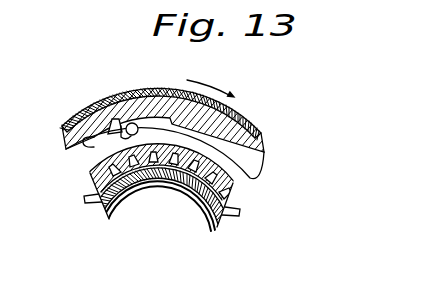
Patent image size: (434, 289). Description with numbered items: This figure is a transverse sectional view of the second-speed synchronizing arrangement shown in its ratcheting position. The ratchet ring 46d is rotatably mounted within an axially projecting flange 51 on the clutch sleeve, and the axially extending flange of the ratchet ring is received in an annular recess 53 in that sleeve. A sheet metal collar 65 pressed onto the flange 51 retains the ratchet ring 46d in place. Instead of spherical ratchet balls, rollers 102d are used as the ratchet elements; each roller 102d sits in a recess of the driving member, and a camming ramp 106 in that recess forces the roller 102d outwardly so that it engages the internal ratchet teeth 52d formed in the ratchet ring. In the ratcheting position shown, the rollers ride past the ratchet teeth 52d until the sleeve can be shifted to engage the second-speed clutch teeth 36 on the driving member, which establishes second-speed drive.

The sheet metal collar 65 is at (236, 118).
The internal ratchet teeth 52d is at (168, 119).
The camming ramp 106 is at (113, 110).
The axially projecting flange 51 is at (252, 157).
The annular recess 53 is at (70, 152).
The roller 102d is at (129, 125).
The ratchet ring 46d is at (251, 189).
The clutch teeth 36 is at (86, 201).